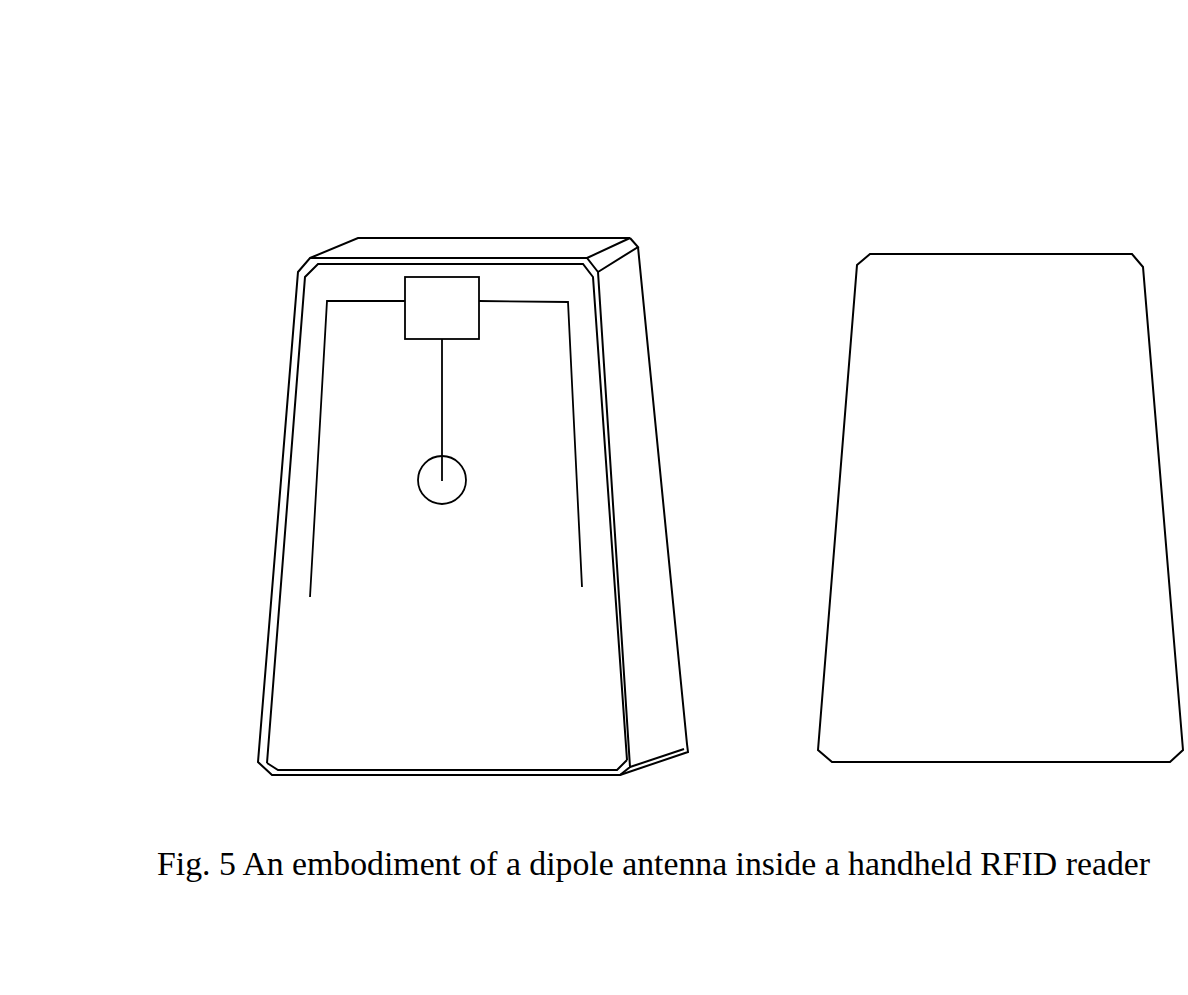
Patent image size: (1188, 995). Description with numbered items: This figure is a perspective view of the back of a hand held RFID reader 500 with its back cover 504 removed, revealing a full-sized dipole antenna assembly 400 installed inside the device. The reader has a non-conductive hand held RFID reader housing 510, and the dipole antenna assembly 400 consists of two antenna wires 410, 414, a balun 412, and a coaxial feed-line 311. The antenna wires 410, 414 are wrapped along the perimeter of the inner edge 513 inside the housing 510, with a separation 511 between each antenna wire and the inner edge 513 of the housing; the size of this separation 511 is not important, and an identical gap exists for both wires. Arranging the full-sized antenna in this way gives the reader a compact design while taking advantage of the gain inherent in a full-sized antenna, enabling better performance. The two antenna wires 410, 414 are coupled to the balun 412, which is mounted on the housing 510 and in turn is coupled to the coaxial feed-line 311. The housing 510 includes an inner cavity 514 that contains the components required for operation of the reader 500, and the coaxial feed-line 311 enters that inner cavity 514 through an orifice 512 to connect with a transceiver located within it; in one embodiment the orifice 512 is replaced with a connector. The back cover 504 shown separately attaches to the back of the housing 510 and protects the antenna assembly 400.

The hand held RFID reader 500 is at (1013, 112).
The back cover 504 is at (842, 352).
The hand held RFID reader housing 510 is at (293, 407).
The separation 511 is at (298, 570).
The inner edge 513 is at (280, 682).
The dipole antenna assembly 400 is at (408, 378).
The antenna wire 410 is at (317, 582).
The antenna wire 414 is at (578, 570).
The balun 412 is at (460, 288).
The coaxial feed-line 311 is at (443, 428).
The orifice 512 is at (410, 480).
The inner cavity 514 is at (442, 490).